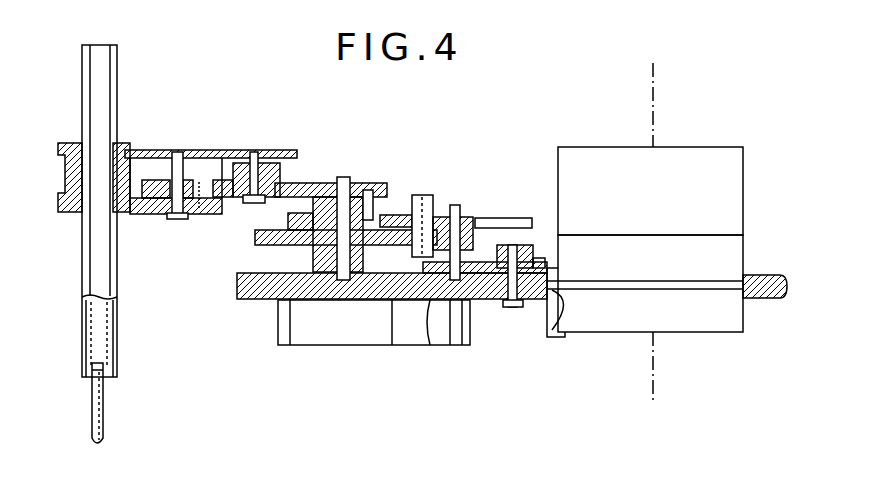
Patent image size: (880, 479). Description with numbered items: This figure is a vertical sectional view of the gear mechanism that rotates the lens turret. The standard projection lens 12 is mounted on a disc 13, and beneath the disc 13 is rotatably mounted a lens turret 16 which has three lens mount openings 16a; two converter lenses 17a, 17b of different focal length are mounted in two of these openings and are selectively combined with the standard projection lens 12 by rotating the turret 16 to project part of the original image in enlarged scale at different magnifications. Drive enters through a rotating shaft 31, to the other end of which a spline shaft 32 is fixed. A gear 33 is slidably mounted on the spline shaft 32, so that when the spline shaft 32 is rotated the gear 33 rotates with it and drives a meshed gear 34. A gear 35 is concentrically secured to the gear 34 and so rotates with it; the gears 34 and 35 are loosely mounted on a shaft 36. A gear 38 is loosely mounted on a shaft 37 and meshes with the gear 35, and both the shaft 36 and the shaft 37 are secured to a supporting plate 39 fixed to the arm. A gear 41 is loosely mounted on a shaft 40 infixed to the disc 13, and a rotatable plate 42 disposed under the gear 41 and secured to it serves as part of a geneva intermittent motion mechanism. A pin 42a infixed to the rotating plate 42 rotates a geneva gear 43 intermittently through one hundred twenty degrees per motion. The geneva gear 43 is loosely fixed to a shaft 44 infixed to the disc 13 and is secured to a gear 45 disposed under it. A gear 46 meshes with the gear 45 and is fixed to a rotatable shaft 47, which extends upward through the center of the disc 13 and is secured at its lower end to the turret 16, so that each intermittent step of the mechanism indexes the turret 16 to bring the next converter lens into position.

The standard projection lens 12 is at (722, 184).
The disc 13 is at (748, 273).
The lens turret 16 is at (765, 300).
The lens mount openings 16a is at (557, 338).
The converter lens 17a is at (720, 332).
The converter lens 17b is at (332, 345).
The rotating shaft 31 is at (103, 411).
The spline shaft 32 is at (100, 82).
The gear 33 is at (70, 145).
The gear 34 is at (152, 215).
The gear 35 is at (150, 180).
The shaft 36 is at (178, 156).
The shaft 37 is at (235, 205).
The gear 38 is at (292, 183).
The supporting plate 39 is at (290, 150).
The shaft 40 is at (346, 177).
The gear 41 is at (372, 195).
The rotatable plate 42 is at (255, 240).
The pin 42a is at (440, 190).
The geneva gear 43 is at (512, 218).
The shaft 44 is at (458, 210).
The gear 45 is at (428, 345).
The gear 46 is at (535, 262).
The rotatable shaft 47 is at (512, 308).